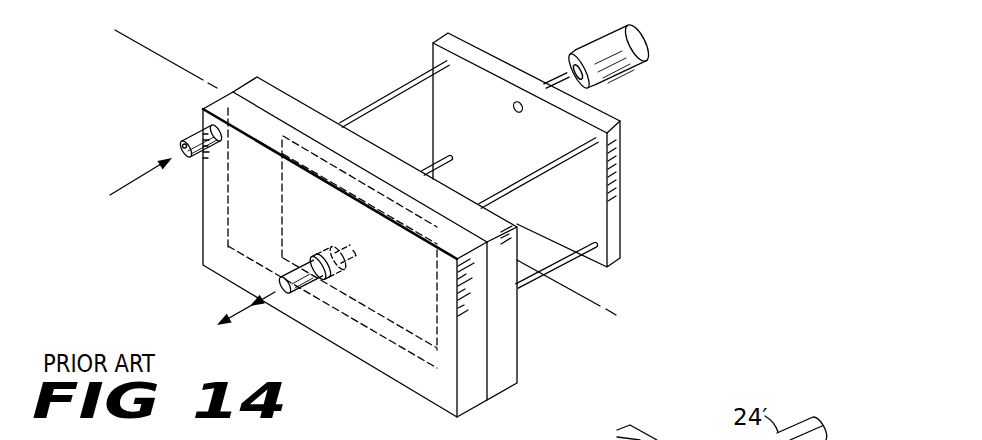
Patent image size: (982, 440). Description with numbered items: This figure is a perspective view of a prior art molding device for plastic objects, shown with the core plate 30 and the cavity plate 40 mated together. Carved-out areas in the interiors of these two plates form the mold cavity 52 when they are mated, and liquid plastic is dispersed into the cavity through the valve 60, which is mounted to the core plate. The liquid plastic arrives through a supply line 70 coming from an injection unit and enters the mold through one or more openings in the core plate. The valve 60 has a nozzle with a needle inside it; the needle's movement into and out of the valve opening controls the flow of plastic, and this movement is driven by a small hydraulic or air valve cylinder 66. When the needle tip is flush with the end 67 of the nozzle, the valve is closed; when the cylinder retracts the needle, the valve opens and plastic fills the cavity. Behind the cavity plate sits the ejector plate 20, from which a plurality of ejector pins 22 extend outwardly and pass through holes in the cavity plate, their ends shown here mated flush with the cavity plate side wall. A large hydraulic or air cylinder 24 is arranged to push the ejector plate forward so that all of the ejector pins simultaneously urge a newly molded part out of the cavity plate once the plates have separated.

The ejector plate 20 is at (617, 117).
The ejector pins 22 is at (421, 80).
The hydraulic or air cylinder 24 is at (577, 56).
The core plate 30 is at (207, 100).
The cavity plate 40 is at (243, 75).
The cavity 52 is at (270, 239).
The valve 60 is at (348, 284).
The valve cylinder 66 is at (300, 294).
The end of the nozzle 67 is at (352, 250).
The supply line 70 is at (186, 139).